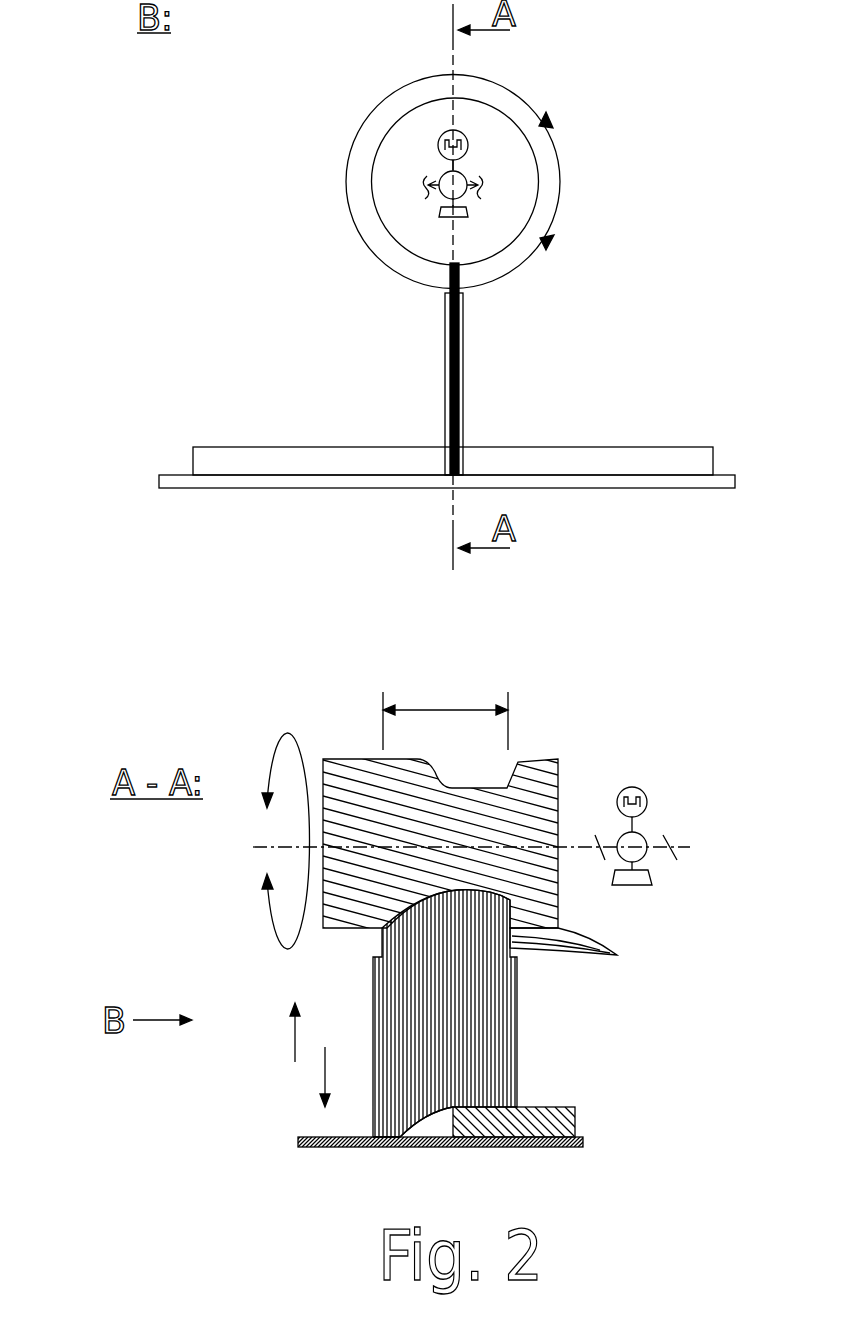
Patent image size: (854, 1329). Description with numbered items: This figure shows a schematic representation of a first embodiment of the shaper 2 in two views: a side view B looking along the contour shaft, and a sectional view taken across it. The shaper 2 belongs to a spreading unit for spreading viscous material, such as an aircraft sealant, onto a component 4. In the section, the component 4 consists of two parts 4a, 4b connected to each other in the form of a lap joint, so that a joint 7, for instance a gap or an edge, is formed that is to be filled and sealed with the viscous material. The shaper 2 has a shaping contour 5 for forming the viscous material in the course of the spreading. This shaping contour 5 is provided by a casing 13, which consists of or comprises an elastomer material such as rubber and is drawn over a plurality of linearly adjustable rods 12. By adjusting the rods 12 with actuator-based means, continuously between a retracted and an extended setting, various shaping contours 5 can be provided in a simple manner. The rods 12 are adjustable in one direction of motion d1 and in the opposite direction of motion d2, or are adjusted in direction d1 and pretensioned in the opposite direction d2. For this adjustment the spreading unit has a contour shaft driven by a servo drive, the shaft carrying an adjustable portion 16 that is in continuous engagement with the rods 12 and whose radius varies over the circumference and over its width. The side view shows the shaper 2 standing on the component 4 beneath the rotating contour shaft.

The shaper 2 is at (437, 371).
The component 4 is at (183, 420).
The first part of the component 4a is at (577, 1110).
The second part of the component 4b is at (568, 1148).
The shaping contour 5 is at (441, 1109).
The joint 7 is at (430, 1125).
The rods 12 is at (572, 923).
The casing 13 is at (520, 1027).
The adjustable portion 16 is at (470, 708).
The direction of motion d1 is at (320, 1065).
The opposite direction of motion d2 is at (293, 1033).